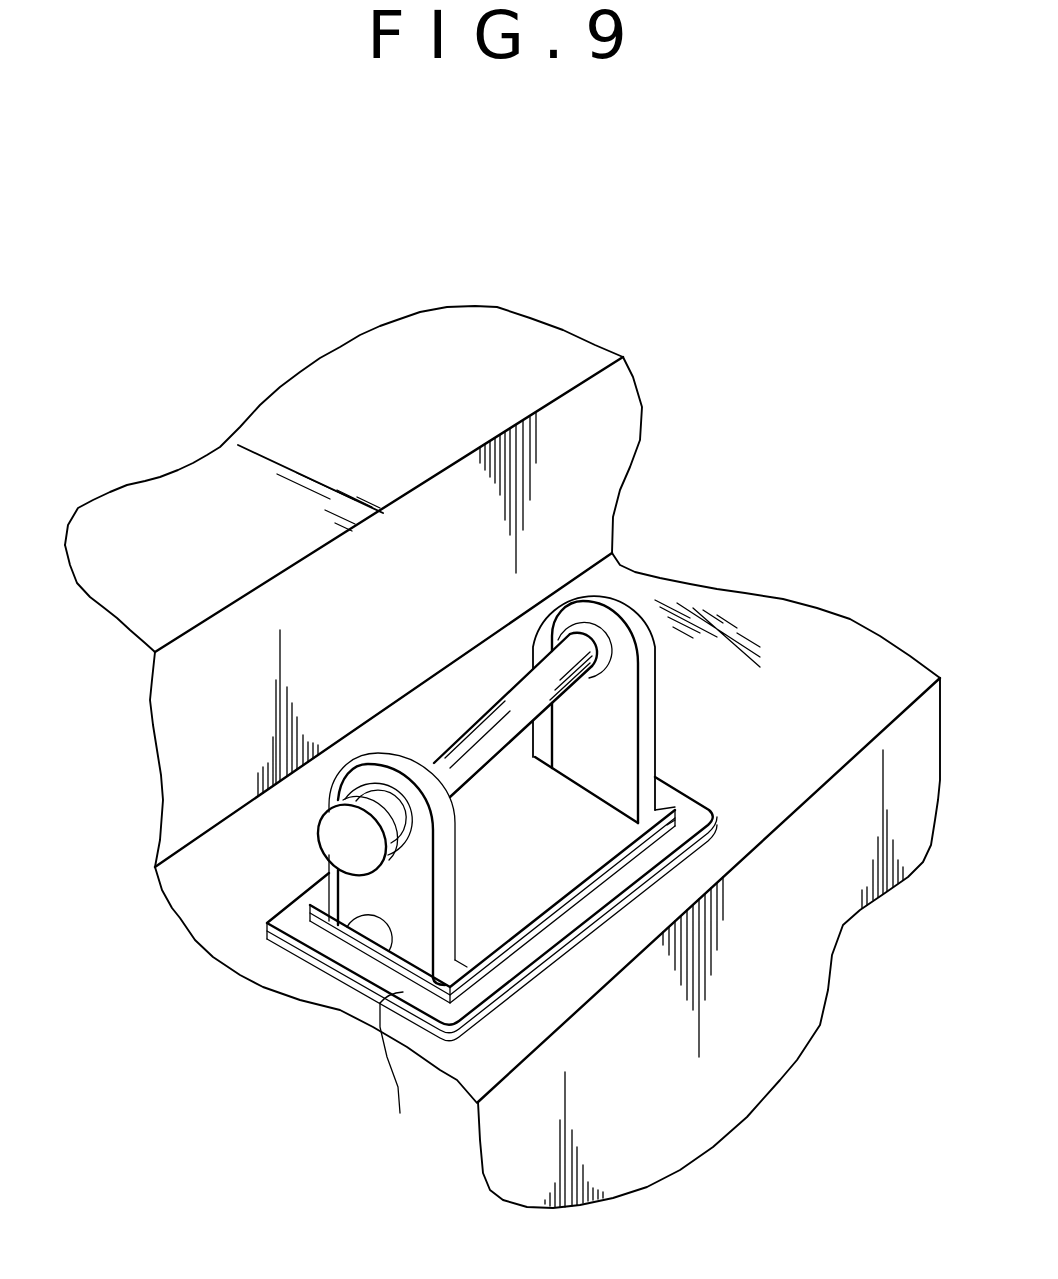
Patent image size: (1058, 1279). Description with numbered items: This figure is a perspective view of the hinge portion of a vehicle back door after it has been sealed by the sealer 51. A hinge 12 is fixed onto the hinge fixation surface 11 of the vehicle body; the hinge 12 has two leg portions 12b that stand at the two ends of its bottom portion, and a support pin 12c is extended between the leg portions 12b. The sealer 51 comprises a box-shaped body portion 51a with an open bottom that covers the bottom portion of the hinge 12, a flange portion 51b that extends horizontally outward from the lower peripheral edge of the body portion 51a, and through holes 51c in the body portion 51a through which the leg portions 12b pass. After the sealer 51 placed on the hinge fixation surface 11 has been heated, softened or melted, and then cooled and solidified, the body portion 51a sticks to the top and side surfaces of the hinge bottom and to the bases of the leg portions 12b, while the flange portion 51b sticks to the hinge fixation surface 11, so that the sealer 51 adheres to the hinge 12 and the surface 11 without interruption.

The hinge fixation surface 11 is at (797, 630).
The hinge 12 is at (486, 729).
The leg portions 12b is at (657, 753).
The support pin 12c is at (503, 712).
The sealer 51 is at (406, 969).
The body portion 51a is at (543, 880).
The flange portion 51b is at (497, 992).
The through holes 51c is at (350, 913).